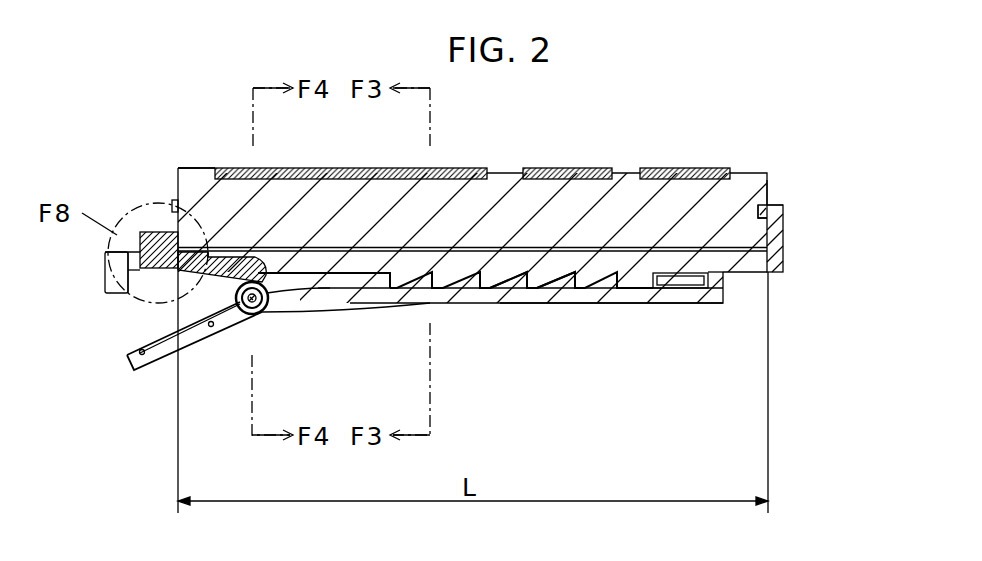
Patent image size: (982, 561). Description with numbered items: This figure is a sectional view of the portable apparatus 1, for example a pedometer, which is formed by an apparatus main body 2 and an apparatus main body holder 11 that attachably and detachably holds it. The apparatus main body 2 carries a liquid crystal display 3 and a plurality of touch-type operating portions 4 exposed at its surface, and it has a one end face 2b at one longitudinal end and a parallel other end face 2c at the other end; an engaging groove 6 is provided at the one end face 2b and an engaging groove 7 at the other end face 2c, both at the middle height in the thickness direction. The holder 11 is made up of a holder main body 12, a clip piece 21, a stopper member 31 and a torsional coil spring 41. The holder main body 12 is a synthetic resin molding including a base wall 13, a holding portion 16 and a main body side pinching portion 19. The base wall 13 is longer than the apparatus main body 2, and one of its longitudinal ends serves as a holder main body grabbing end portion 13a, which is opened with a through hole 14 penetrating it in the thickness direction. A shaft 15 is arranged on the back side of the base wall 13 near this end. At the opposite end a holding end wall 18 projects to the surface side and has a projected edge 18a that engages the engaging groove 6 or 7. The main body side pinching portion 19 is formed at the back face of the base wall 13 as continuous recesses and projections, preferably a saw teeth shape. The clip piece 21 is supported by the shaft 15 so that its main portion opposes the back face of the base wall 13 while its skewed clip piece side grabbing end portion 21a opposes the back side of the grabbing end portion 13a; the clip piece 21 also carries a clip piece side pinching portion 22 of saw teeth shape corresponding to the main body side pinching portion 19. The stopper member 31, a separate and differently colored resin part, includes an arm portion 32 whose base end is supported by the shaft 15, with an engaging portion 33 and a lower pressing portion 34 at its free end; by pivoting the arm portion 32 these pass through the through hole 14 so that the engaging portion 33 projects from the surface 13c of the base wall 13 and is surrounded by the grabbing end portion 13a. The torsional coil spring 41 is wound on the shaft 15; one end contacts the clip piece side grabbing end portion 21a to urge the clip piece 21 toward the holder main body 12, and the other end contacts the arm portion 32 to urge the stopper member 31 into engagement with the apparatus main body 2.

The portable apparatus 1 is at (737, 292).
The apparatus main body 2 is at (754, 168).
The one end face 2b is at (767, 185).
The other end face 2c is at (178, 180).
The display 3 is at (377, 173).
The operating portions 4 is at (690, 170).
The engaging groove 6 is at (759, 206).
The engaging groove 7 is at (178, 206).
The apparatus main body holder 11 is at (319, 289).
The holder main body 12 is at (782, 272).
The base wall 13 is at (351, 263).
The holder main body grabbing end portion 13a is at (118, 280).
The surface of the base wall 13c is at (449, 250).
The through hole 14 is at (118, 262).
The shaft 15 is at (254, 305).
The holding portion 16 is at (783, 224).
The holding end wall 18 is at (775, 245).
The projected edge 18a is at (780, 205).
The main body side pinching portion 19 is at (537, 280).
The clip piece 21 is at (375, 303).
The clip piece side grabbing end portion 21a is at (158, 357).
The clip piece side pinching portion 22 is at (507, 283).
The stopper member 31 is at (132, 230).
The arm portion 32 is at (256, 260).
The engaging portion 33 is at (157, 250).
The pressing portion 34 is at (205, 250).
The torsional coil spring 41 is at (250, 312).